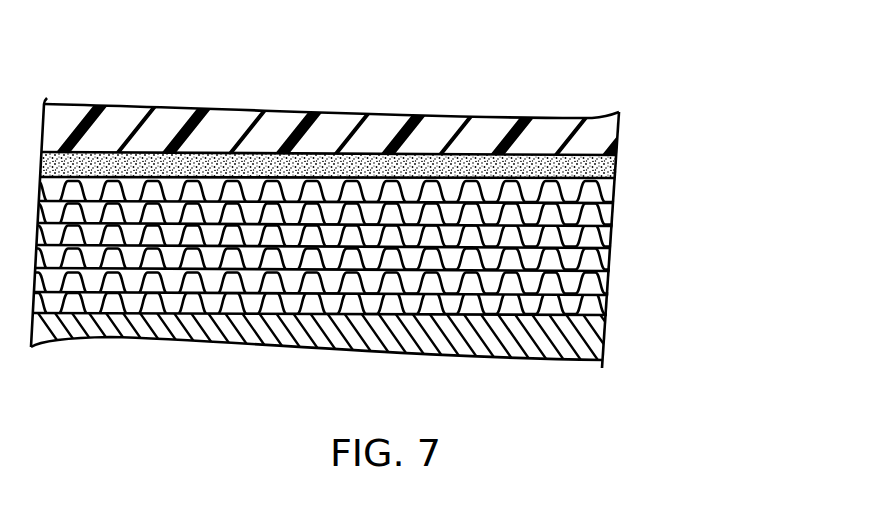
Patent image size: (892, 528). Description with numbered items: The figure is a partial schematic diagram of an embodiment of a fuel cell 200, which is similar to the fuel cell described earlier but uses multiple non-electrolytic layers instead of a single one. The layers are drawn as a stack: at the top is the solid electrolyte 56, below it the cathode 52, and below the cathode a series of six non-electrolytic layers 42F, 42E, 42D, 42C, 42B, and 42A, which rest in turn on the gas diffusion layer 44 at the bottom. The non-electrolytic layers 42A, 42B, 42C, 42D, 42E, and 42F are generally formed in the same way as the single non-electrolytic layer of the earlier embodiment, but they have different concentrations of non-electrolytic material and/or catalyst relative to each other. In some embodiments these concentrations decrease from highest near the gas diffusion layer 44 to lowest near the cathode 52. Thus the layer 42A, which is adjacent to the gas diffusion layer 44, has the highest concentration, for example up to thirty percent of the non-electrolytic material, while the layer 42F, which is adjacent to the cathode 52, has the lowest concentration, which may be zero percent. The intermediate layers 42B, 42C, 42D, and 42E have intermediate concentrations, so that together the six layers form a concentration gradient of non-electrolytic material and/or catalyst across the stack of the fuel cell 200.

The fuel cell 200 is at (676, 55).
The solid electrolyte 56 is at (595, 137).
The cathode 52 is at (605, 166).
The non-electrolytic layer 42F is at (598, 188).
The non-electrolytic layer 42E is at (593, 212).
The non-electrolytic layer 42D is at (600, 233).
The non-electrolytic layer 42C is at (600, 257).
The non-electrolytic layer 42B is at (597, 280).
The non-electrolytic layer 42A is at (597, 303).
The gas diffusion layer 44 is at (583, 340).